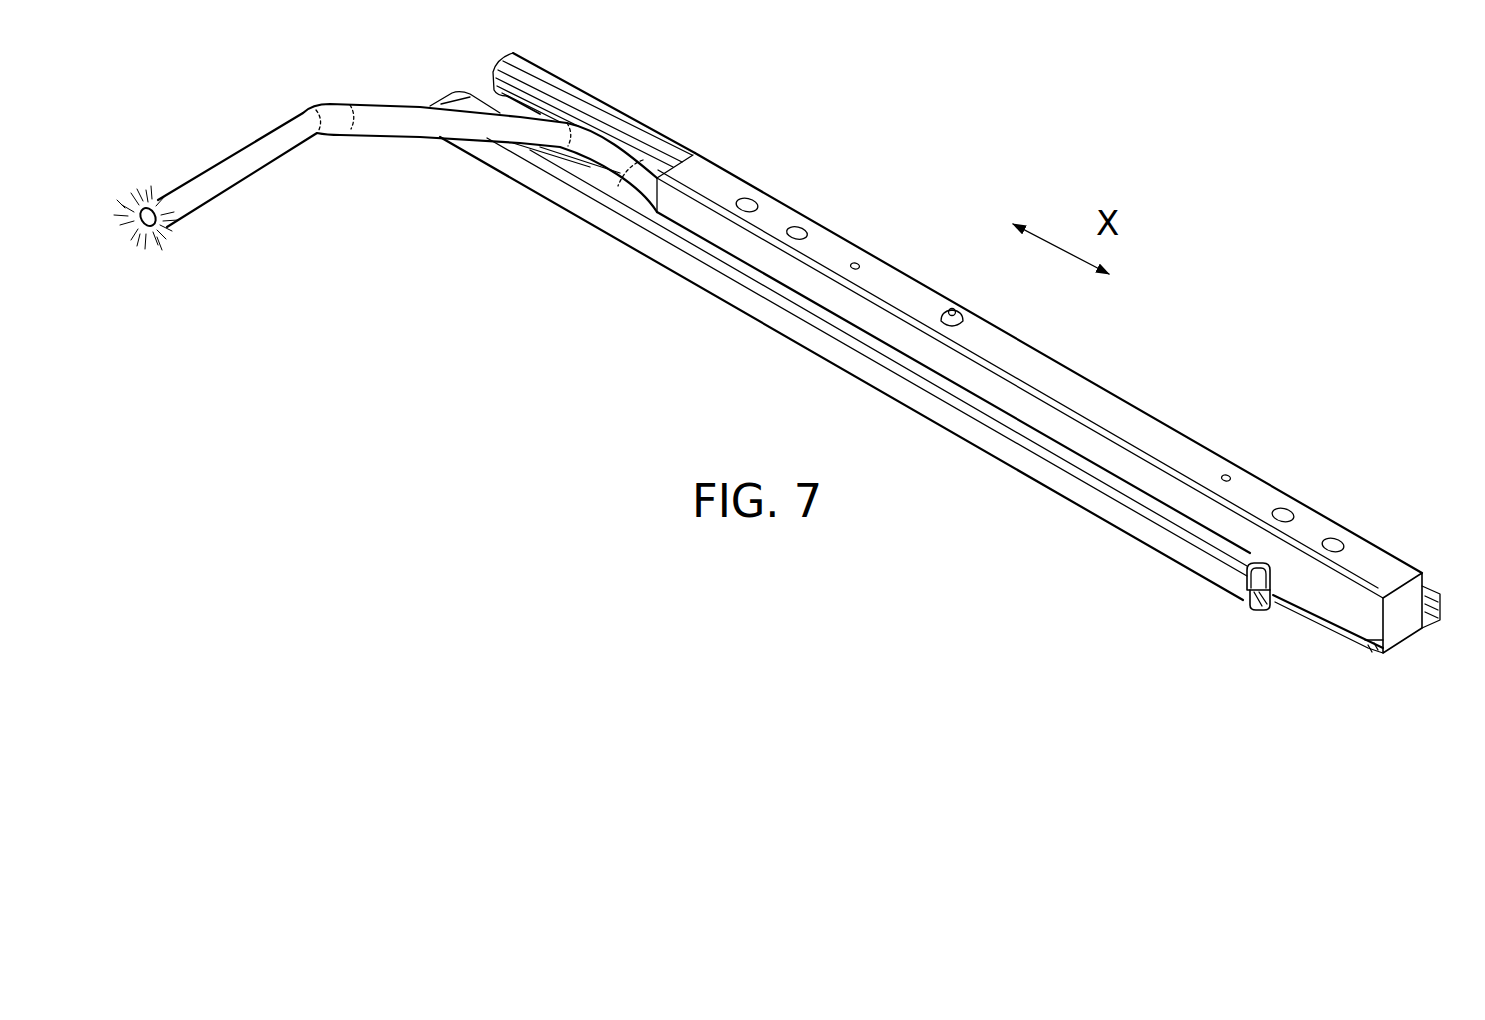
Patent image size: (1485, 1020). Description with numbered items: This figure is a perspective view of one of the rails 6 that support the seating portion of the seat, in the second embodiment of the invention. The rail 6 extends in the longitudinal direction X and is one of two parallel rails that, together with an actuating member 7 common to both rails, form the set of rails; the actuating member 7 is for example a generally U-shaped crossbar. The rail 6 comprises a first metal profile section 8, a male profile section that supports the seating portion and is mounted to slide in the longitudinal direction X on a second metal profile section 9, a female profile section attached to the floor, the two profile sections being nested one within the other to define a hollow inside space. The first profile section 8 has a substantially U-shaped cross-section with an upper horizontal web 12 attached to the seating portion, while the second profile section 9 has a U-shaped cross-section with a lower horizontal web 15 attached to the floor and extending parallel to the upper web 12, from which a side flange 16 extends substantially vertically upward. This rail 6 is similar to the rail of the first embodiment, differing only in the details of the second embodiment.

The rail 6 is at (935, 378).
The actuating member 7 is at (223, 171).
The first metal profile section 8 is at (1334, 509).
The second metal profile section 9 is at (1144, 557).
The upper horizontal web 12 is at (1175, 445).
The lower horizontal web 15 is at (1276, 606).
The side flange 16 is at (1218, 568).